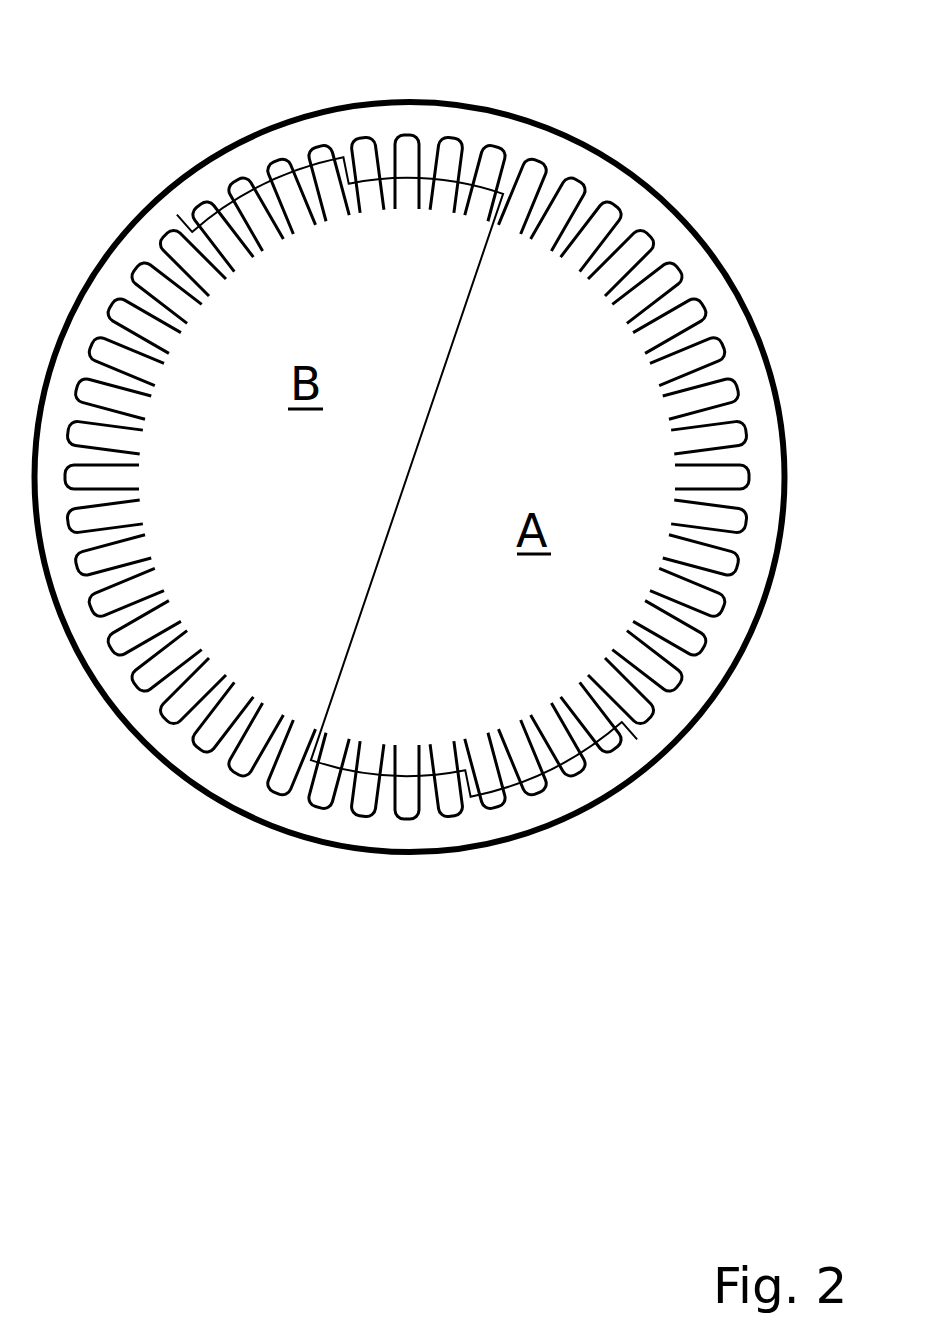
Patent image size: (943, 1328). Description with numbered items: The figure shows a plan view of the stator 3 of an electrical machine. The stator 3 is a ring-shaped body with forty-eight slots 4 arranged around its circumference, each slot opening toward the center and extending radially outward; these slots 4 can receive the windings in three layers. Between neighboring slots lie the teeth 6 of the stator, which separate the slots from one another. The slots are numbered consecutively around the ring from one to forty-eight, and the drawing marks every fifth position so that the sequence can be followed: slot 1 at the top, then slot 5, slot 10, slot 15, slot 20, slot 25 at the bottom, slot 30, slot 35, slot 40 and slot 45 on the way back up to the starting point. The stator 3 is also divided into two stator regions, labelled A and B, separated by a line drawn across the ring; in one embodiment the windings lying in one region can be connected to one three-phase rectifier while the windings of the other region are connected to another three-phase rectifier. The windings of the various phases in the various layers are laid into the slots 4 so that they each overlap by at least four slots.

The slot 1 is at (407, 156).
The stator 3 is at (421, 58).
The slots 4 is at (407, 477).
The slot 5 is at (566, 199).
The teeth 6 is at (161, 597).
The slot 10 is at (705, 351).
The slot 15 is at (718, 563).
The slot 20 is at (605, 733).
The slot 25 is at (407, 798).
The slot 30 is at (209, 733).
The slot 35 is at (96, 563).
The slot 40 is at (109, 351).
The slot 45 is at (243, 197).